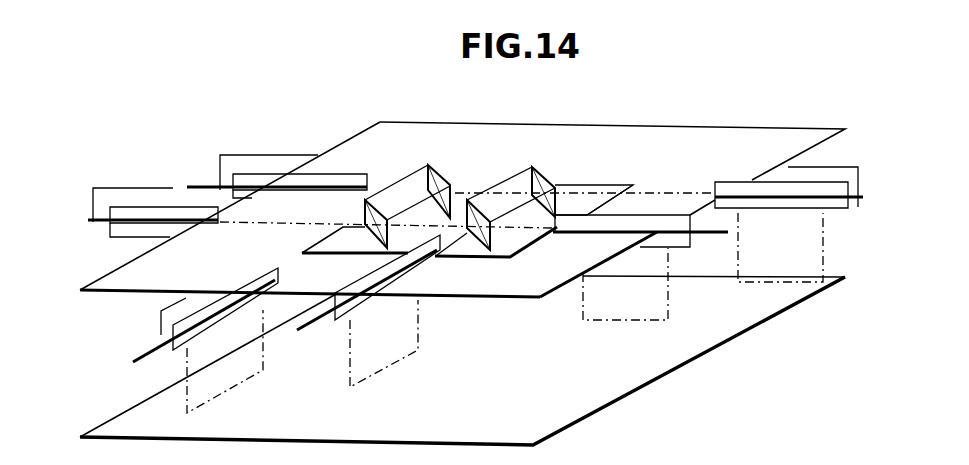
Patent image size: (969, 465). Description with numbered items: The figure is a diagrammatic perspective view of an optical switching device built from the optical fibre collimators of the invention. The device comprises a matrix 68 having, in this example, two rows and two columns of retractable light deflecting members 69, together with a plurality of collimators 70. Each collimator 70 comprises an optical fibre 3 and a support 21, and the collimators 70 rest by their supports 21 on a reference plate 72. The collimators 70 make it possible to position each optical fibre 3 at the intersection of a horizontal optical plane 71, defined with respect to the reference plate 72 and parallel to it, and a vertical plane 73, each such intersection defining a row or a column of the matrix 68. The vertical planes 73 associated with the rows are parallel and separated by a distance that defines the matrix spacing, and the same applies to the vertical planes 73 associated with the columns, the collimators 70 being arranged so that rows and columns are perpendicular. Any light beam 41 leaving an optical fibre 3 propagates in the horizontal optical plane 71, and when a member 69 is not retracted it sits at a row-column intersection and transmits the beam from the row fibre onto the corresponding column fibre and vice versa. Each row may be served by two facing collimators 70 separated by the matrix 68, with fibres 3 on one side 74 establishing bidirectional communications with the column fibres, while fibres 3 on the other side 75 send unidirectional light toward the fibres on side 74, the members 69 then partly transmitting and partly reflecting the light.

The optical fibre 3 is at (93, 222).
The support 21 is at (823, 258).
The light beam 41 is at (409, 185).
The matrix 68 is at (603, 184).
The retractable light deflecting member 69 is at (363, 201).
The collimator 70 is at (244, 275).
The horizontal optical plane 71 is at (689, 126).
The reference plate 72 is at (587, 417).
The vertical plane 73 is at (95, 188).
The matrix side 74 is at (318, 243).
The other matrix side 75 is at (640, 186).